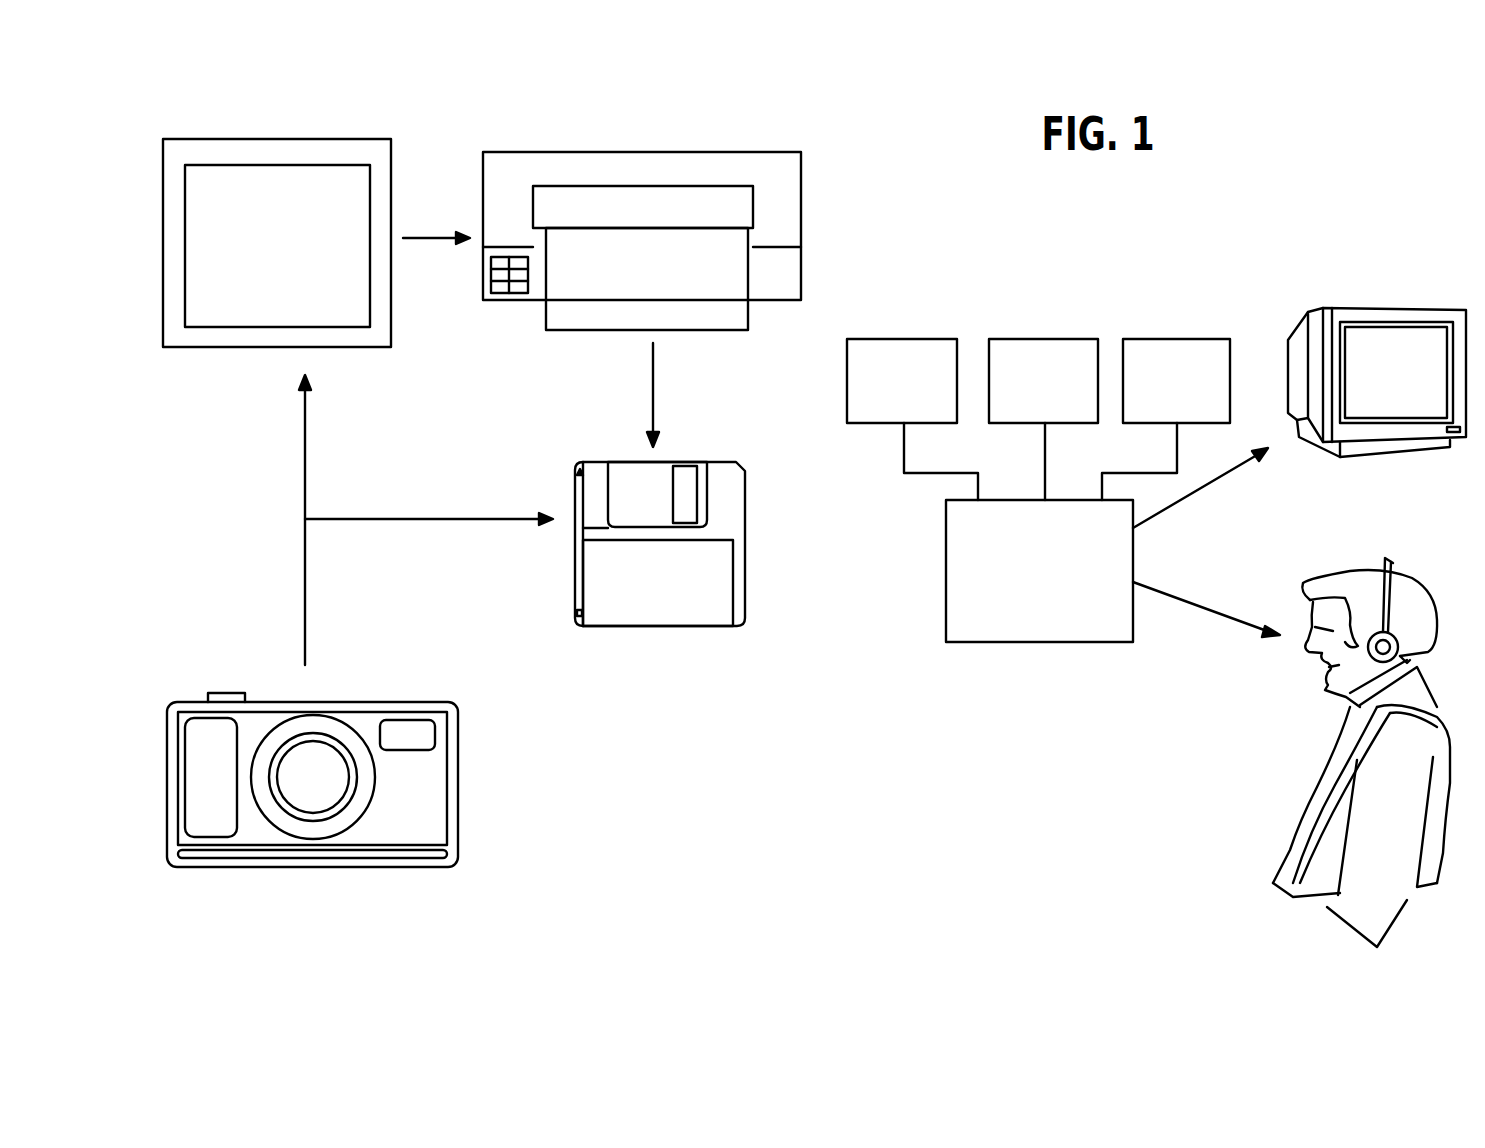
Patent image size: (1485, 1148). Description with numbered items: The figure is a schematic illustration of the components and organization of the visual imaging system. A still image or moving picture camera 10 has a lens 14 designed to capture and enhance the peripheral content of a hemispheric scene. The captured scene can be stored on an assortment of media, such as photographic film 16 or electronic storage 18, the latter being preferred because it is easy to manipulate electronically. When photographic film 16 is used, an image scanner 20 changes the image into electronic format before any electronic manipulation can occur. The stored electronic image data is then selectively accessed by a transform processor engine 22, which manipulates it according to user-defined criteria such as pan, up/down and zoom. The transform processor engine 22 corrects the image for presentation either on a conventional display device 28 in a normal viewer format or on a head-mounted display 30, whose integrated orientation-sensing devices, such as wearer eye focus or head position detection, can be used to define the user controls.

The camera 10 is at (368, 822).
The lens 14 is at (383, 837).
The photographic film 16 is at (238, 347).
The electronic storage 18 is at (710, 626).
The image scanner 20 is at (770, 152).
The transform processor engine 22 is at (1088, 678).
The display device 28 is at (1412, 307).
The head-mounted display 30 is at (1393, 563).